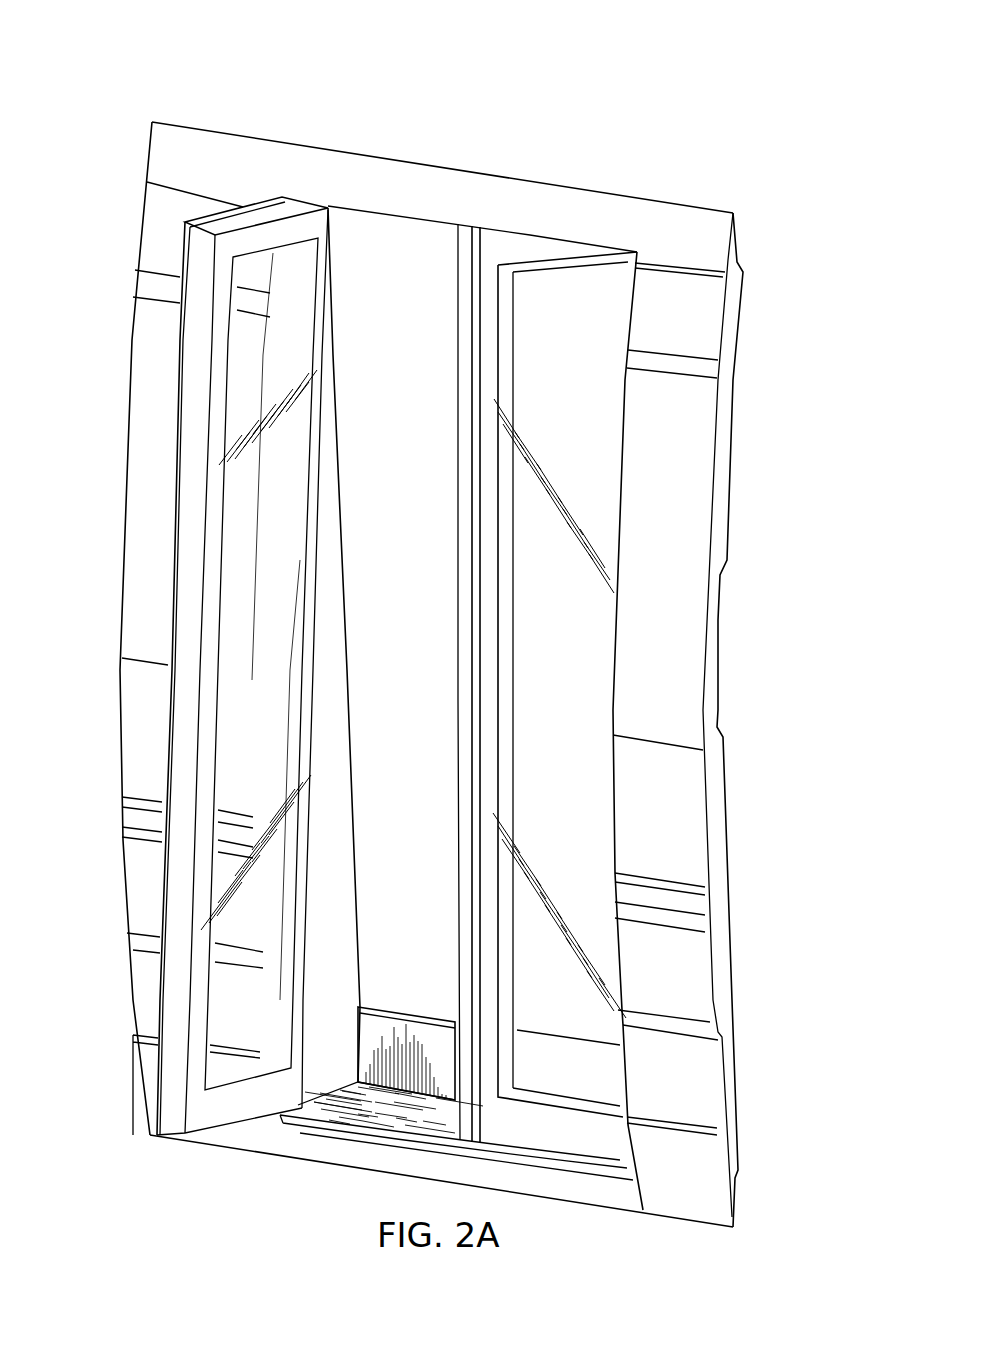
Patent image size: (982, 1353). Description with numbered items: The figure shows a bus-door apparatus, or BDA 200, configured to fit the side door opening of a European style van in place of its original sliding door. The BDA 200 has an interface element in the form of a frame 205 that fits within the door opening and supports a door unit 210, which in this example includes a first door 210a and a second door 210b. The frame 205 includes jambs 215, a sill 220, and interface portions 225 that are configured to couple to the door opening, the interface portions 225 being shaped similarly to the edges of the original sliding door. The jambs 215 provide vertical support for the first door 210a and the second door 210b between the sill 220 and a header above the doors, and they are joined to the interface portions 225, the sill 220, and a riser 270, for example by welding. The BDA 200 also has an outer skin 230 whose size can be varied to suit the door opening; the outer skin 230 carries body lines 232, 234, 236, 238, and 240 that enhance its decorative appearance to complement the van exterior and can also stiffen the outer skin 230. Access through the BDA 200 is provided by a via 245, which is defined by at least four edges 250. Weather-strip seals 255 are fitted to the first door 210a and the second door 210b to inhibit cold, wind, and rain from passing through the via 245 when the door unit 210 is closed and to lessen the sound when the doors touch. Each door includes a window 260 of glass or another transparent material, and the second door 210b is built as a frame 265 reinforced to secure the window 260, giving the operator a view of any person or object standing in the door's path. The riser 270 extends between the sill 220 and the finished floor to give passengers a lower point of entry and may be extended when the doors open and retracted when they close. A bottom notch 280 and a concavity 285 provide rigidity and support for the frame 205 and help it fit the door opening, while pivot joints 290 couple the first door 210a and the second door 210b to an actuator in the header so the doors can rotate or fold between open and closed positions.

The bus-door apparatus 200 is at (226, 60).
The frame 205 is at (692, 208).
The door unit 210 is at (600, 222).
The first door 210a is at (222, 223).
The second door 210b is at (550, 248).
The jambs 215 is at (357, 830).
The sill 220 is at (357, 1133).
The interface portions 225 is at (722, 953).
The outer skin 230 is at (318, 150).
The body line 232 is at (147, 285).
The body line 234 is at (120, 668).
The body line 236 is at (122, 812).
The body line 238 is at (130, 940).
The body line 240 is at (135, 1045).
The via 245 is at (417, 227).
The edges 250 is at (385, 215).
The weather-strip seals 255 is at (178, 470).
The window 260 is at (582, 663).
The frame 265 is at (507, 345).
The riser 270 is at (415, 1030).
The bottom notch 280 is at (757, 240).
The concavity 285 is at (753, 1190).
The pivot joints 290 is at (745, 615).